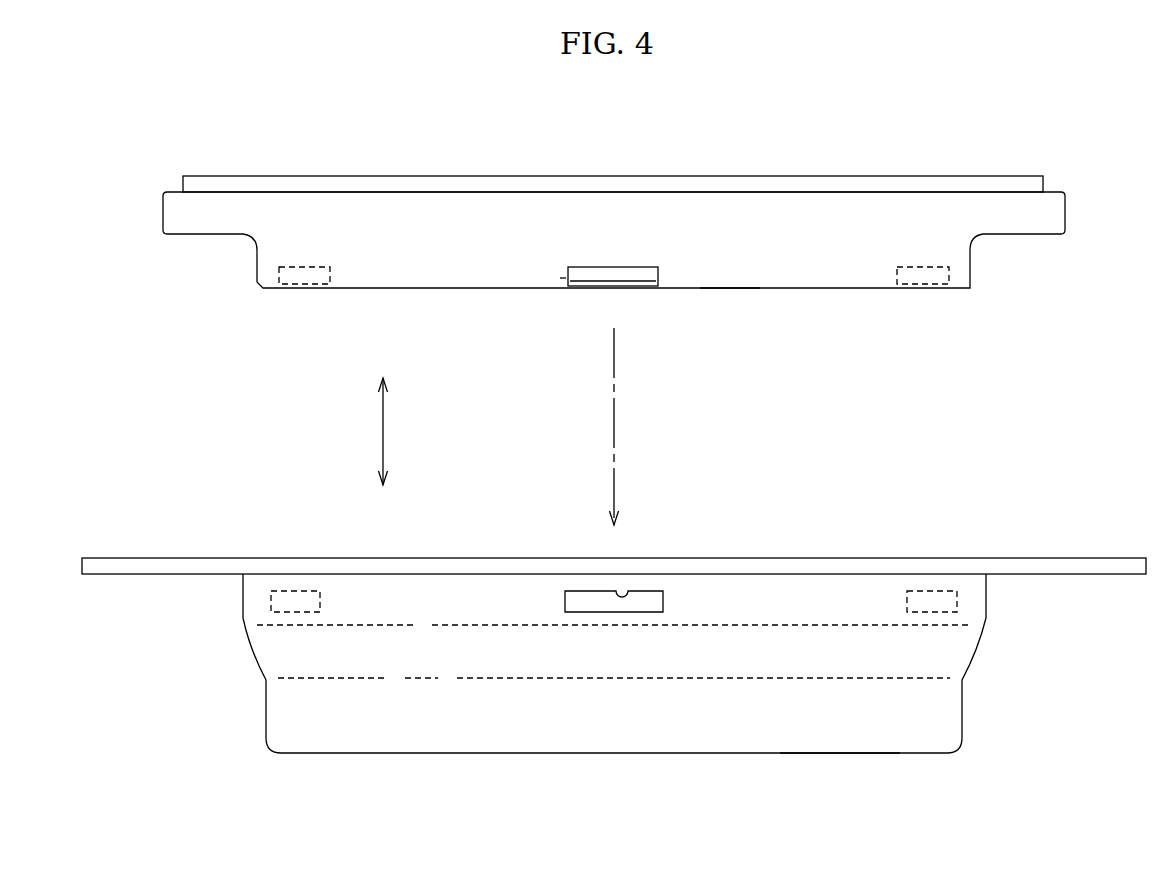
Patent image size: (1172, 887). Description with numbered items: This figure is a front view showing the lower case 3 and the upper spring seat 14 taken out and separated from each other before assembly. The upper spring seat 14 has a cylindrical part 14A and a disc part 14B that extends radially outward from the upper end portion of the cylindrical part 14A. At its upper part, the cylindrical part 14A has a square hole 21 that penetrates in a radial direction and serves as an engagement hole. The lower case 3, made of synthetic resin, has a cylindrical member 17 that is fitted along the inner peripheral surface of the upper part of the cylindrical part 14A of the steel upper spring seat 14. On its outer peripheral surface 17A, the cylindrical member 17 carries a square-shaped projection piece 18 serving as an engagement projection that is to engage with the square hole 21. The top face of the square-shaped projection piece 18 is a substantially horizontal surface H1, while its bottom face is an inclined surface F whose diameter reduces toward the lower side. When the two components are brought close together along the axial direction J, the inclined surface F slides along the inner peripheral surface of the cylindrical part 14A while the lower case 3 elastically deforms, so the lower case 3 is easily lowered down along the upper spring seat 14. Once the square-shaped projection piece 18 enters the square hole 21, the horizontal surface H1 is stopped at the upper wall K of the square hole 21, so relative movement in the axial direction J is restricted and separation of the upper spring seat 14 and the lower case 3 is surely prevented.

The lower case 3 is at (688, 168).
The cylindrical member 17 is at (802, 255).
The outer peripheral surface 17A is at (733, 266).
The square-shaped projection piece 18 is at (268, 282).
The substantially horizontal surface H1 is at (604, 267).
The inclined surface F is at (636, 287).
The axial direction J is at (376, 431).
The upper wall K is at (622, 591).
The upper spring seat 14 is at (706, 543).
The cylindrical part 14A is at (832, 728).
The disc part 14B is at (1112, 565).
The square hole 21 is at (298, 585).